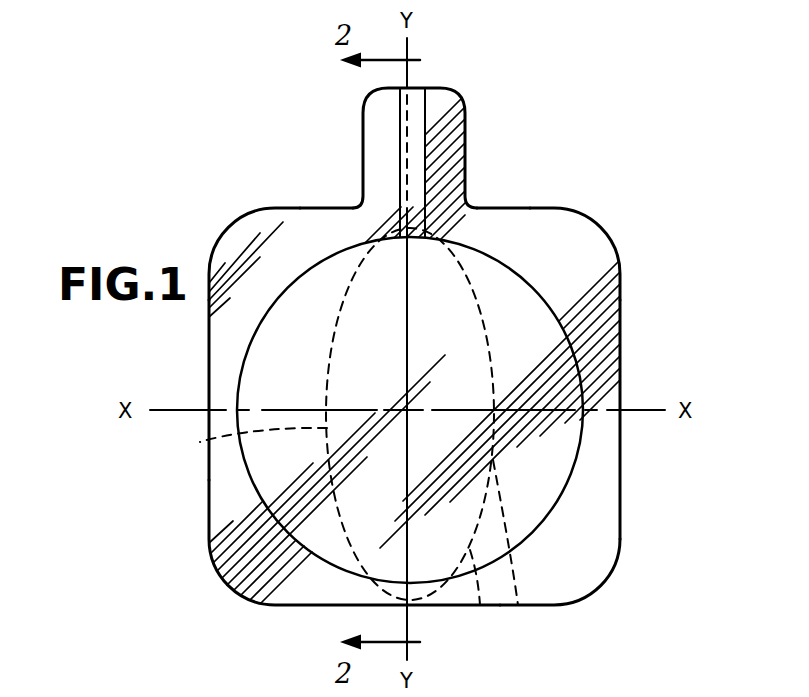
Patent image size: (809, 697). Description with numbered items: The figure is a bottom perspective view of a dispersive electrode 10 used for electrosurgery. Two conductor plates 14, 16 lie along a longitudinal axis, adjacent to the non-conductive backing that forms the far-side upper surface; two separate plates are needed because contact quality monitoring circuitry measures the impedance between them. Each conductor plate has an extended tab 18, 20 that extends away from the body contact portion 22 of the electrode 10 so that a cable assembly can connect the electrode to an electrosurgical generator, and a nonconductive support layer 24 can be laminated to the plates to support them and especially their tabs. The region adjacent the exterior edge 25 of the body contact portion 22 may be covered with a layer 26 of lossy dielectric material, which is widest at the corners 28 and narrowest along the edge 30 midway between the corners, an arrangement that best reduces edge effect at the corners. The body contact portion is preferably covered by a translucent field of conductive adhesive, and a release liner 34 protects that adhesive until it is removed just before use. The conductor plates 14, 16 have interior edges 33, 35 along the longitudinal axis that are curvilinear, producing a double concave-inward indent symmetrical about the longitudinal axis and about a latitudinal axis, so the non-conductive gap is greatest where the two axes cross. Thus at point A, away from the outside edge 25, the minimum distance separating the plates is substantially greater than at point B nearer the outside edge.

The dispersive electrode 10 is at (197, 138).
The conductor plate 14 is at (315, 308).
The conductor plate 16 is at (497, 292).
The extended tab 18 is at (377, 108).
The extended tab 20 is at (452, 110).
The body contact portion 22 is at (636, 307).
The nonconductive support layer 24 is at (421, 90).
The exterior edge 25 is at (620, 462).
The layer of lossy dielectric material 26 is at (590, 238).
The corners 28 is at (226, 236).
The edge 30 is at (207, 389).
The interior edge 33 is at (352, 532).
The release liner 34 is at (578, 578).
The interior edge 35 is at (518, 605).
The point A is at (200, 442).
The point B is at (480, 605).